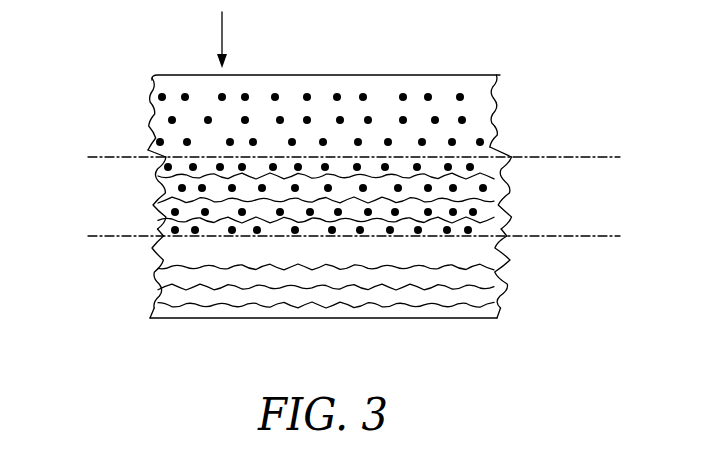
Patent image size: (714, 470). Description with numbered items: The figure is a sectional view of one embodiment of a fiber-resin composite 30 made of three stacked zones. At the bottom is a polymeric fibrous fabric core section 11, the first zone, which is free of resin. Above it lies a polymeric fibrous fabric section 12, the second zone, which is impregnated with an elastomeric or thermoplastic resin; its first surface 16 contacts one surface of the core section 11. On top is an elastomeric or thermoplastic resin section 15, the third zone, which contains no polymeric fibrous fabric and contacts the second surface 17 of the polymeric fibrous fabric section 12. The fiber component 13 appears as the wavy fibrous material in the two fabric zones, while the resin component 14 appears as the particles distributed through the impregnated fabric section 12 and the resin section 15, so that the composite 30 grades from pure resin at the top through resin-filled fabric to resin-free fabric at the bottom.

The fiber-resin composite 30 is at (517, 56).
The elastomeric or thermoplastic resin section 15 is at (571, 75).
The second surface 17 is at (495, 142).
The polymeric fibrous fabric section 12 is at (571, 157).
The first surface 16 is at (507, 241).
The polymeric fibrous fabric core section 11 is at (571, 236).
The fiber component 13 is at (213, 263).
The resin component 14 is at (166, 122).